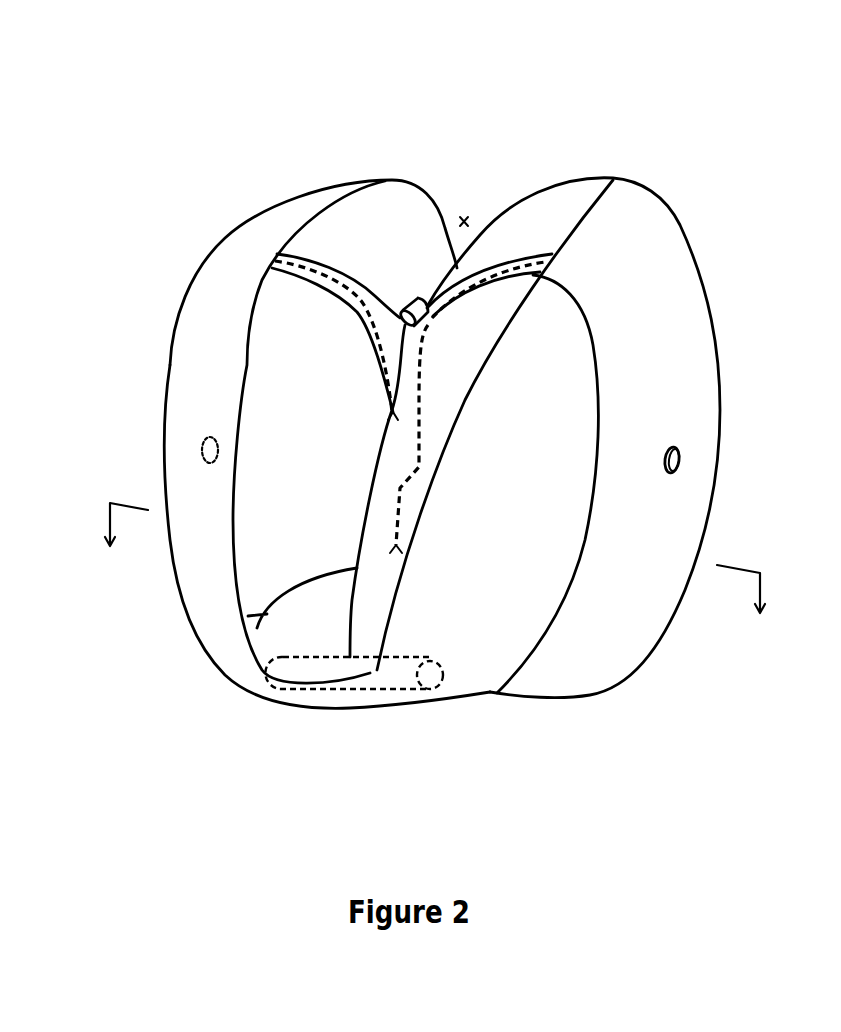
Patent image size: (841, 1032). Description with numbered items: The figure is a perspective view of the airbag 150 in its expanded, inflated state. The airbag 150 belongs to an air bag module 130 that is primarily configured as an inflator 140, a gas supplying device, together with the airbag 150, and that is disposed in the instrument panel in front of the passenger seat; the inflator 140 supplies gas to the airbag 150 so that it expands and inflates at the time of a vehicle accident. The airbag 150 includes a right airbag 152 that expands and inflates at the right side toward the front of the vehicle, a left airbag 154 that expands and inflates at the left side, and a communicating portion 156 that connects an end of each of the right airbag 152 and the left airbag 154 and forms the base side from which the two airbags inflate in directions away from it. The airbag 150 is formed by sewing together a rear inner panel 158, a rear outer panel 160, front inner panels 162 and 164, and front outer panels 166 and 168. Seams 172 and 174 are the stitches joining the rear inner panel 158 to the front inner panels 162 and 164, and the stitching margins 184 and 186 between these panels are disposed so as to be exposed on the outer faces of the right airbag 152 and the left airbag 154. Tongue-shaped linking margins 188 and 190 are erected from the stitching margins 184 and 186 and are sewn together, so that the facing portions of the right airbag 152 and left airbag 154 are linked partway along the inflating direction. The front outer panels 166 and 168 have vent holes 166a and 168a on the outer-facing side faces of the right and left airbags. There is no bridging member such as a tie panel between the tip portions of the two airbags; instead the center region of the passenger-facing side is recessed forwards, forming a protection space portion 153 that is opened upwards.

The air bag module 130 is at (508, 722).
The inflator 140 is at (398, 680).
The airbag 150 is at (517, 73).
The right airbag 152 is at (400, 173).
The protection space portion 153 is at (465, 217).
The left airbag 154 is at (669, 198).
The communicating portion 156 is at (310, 621).
The rear inner panel 158 is at (282, 528).
The rear outer panel 160 is at (207, 580).
The front inner panel 162 is at (377, 200).
The front inner panel 164 is at (570, 200).
The front outer panel 166 is at (243, 247).
The vent hole 166a is at (202, 450).
The front outer panel 168 is at (690, 385).
The vent hole 168a is at (670, 477).
The seam 172 is at (362, 302).
The seam 174 is at (477, 306).
The stitching margin 184 is at (348, 266).
The stitching margin 186 is at (528, 240).
The linking margin 188 is at (400, 321).
The linking margin 190 is at (430, 307).